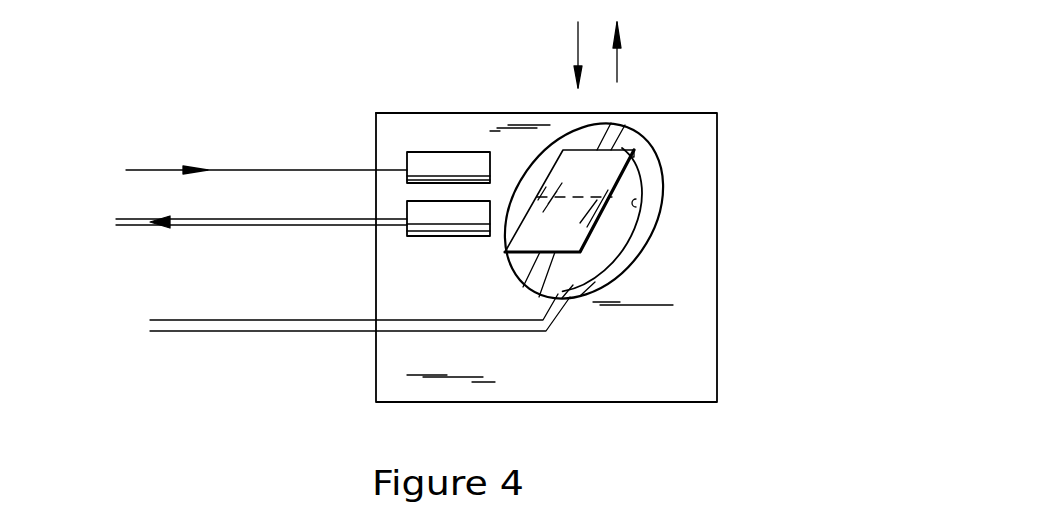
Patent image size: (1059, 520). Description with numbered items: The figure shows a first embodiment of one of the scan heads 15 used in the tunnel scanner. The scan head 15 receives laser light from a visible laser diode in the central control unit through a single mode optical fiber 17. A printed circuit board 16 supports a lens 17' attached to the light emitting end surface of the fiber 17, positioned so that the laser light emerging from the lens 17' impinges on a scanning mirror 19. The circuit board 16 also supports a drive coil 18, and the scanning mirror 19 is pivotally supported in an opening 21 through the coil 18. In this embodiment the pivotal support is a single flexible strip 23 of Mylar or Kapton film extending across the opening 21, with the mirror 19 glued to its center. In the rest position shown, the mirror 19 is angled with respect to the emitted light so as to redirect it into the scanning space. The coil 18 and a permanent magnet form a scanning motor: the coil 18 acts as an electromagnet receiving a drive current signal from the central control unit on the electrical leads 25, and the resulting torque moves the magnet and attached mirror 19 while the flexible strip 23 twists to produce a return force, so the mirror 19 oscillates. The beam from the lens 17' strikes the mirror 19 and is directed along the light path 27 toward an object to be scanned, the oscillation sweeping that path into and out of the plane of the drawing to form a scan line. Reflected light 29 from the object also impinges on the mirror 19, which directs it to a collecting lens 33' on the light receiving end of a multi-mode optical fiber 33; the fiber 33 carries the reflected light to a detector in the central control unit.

The scan head 15 is at (659, 357).
The printed circuit board 16 is at (402, 113).
The single mode optical fiber 17 is at (235, 144).
The lens 17' is at (449, 121).
The multi-mode optical fiber 33 is at (232, 234).
The collecting lens 33' is at (408, 209).
The drive coil 18 is at (643, 242).
The scanning mirror 19 is at (643, 167).
The opening 21 is at (634, 205).
The flexible strip 23 is at (637, 138).
The electrical leads 25 is at (150, 321).
The light path 27 is at (617, 60).
The reflected light 29 is at (578, 37).